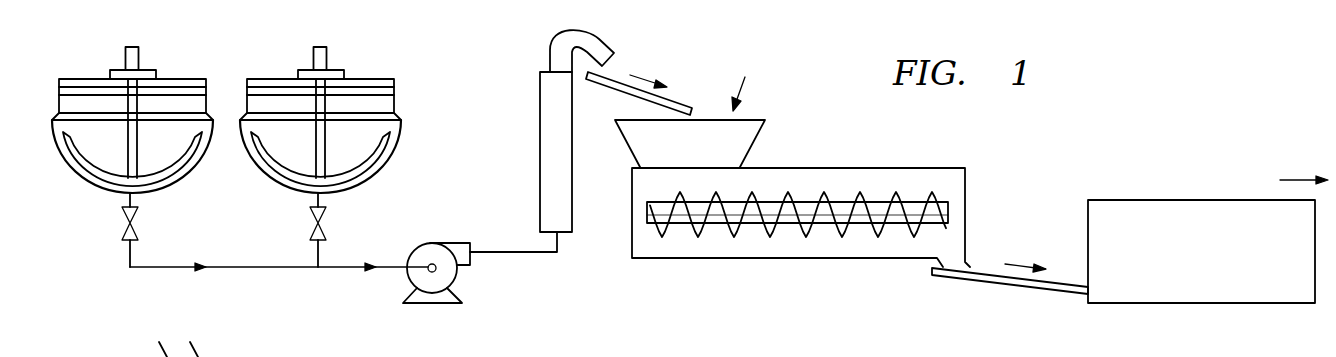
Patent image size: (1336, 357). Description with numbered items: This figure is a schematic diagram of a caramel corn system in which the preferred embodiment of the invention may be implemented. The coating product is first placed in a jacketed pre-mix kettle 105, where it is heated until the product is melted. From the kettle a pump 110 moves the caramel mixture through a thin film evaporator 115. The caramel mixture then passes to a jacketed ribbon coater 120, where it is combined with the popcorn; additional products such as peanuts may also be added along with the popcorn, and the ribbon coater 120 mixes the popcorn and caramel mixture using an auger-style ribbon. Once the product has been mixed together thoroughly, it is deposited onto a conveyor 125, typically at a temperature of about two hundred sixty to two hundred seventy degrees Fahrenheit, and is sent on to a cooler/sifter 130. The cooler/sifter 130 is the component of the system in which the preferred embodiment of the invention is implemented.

The pre-mix kettle 105 is at (78, 176).
The pump 110 is at (458, 275).
The thin film evaporator 115 is at (540, 107).
The ribbon coater 120 is at (716, 259).
The conveyor 125 is at (1050, 293).
The cooler/sifter 130 is at (1245, 304).